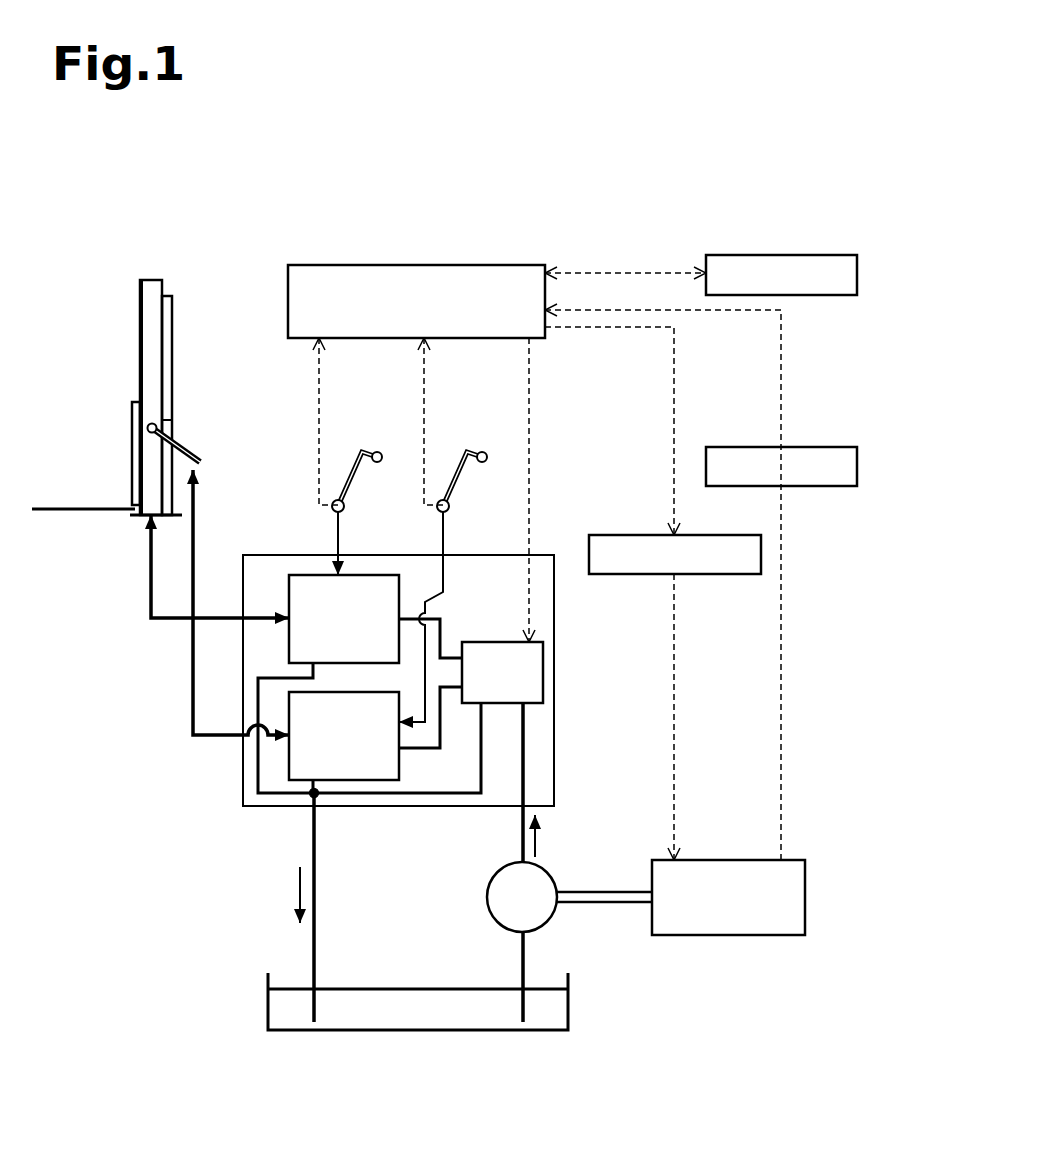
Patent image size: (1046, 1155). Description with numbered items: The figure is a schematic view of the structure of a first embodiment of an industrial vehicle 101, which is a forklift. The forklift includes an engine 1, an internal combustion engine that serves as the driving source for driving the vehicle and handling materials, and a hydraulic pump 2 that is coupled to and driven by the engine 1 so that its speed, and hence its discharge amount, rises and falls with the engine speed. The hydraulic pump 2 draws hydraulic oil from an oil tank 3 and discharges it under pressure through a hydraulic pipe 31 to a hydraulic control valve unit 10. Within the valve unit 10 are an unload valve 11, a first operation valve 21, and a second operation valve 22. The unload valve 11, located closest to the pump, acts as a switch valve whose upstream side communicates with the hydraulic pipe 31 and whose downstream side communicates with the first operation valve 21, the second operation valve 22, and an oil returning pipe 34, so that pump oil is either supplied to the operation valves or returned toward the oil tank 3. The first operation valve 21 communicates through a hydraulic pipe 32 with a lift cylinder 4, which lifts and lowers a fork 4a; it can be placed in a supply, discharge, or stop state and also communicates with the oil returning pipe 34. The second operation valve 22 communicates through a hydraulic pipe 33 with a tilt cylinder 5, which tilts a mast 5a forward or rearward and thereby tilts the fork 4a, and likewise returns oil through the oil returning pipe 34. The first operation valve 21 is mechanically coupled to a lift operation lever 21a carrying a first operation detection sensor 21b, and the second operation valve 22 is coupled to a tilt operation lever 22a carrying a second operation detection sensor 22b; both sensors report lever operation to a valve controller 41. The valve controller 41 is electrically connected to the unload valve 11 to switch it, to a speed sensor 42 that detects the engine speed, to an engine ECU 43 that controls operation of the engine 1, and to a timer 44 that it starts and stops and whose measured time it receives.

The industrial vehicle 101 is at (236, 262).
The engine 1 is at (805, 896).
The hydraulic pump 2 is at (489, 883).
The oil tank 3 is at (568, 1007).
The lift cylinder 4 is at (167, 379).
The fork 4a is at (100, 504).
The tilt cylinder 5 is at (186, 442).
The mast 5a is at (140, 322).
The hydraulic control valve unit 10 is at (543, 554).
The unload valve 11 is at (543, 670).
The first operation valve 21 is at (289, 597).
The lift operation lever 21a is at (360, 452).
The first operation detection sensor 21b is at (346, 508).
The second operation valve 22 is at (289, 758).
The tilt operation lever 22a is at (465, 452).
The second operation detection sensor 22b is at (451, 508).
The hydraulic pipe 31 is at (521, 836).
The hydraulic pipe 32 is at (151, 599).
The hydraulic pipe 33 is at (193, 555).
The oil returning pipe 34 is at (314, 937).
The valve controller 41 is at (288, 300).
The speed sensor 42 is at (840, 447).
The engine ECU 43 is at (761, 553).
The timer 44 is at (840, 255).